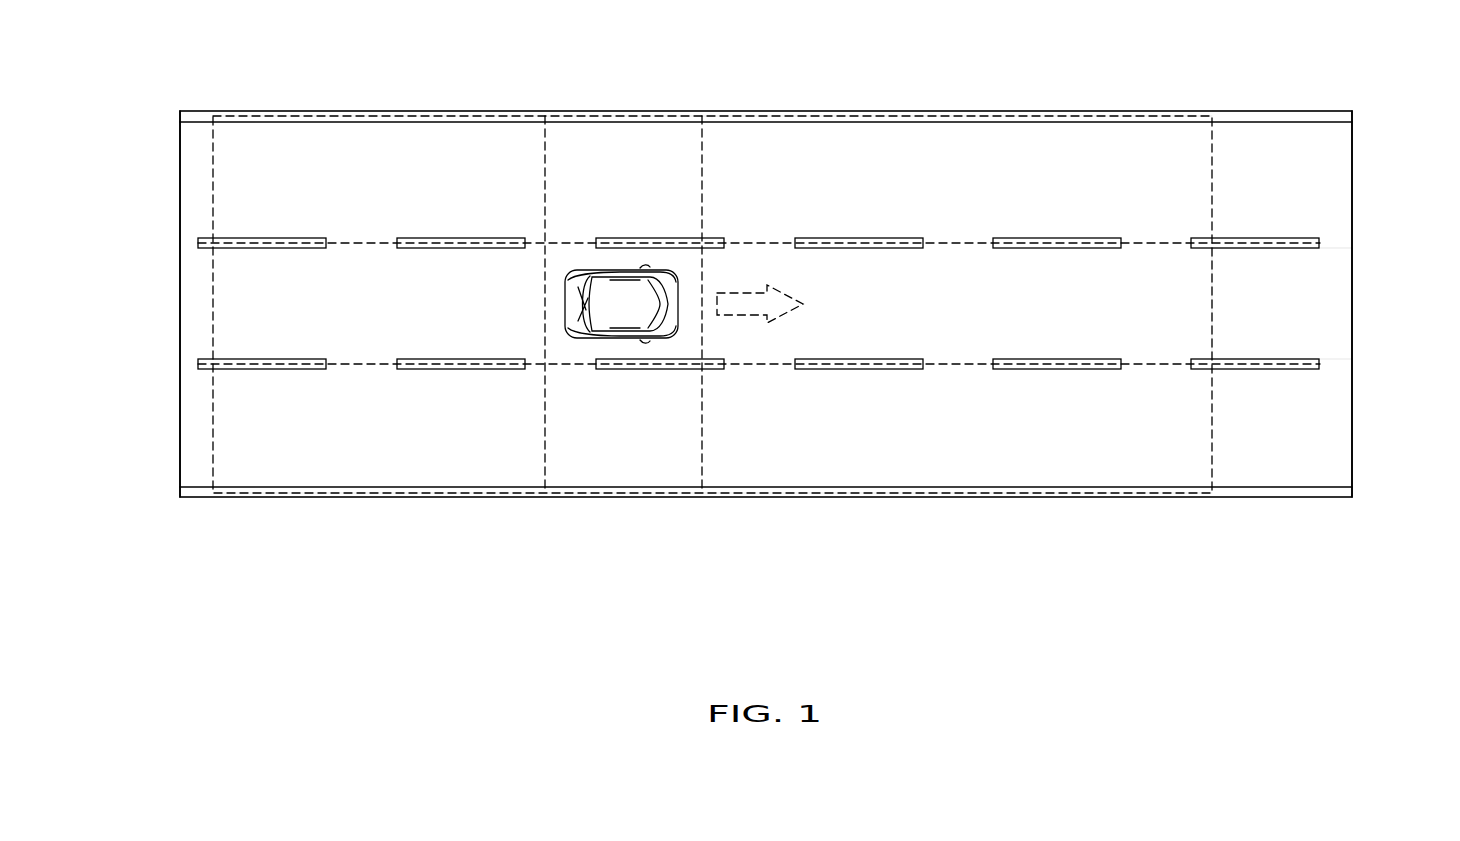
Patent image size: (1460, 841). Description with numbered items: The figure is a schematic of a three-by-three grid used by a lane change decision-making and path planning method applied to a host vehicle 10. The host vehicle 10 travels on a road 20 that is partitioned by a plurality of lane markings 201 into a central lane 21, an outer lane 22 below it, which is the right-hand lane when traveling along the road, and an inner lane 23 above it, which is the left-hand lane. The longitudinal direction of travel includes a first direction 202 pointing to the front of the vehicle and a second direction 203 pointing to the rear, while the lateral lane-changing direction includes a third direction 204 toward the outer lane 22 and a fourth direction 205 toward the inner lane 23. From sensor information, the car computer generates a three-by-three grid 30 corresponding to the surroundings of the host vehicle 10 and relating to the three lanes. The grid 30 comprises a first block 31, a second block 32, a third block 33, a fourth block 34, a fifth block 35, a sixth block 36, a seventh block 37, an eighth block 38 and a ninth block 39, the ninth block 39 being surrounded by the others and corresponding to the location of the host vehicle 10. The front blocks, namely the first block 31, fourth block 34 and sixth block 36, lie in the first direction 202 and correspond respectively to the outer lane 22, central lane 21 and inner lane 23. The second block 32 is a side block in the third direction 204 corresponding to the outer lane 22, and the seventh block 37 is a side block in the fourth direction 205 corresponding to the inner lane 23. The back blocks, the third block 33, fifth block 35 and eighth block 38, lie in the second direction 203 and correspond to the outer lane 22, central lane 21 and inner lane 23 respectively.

The host vehicle 10 is at (612, 315).
The road 20 is at (1300, 158).
The lane markings 201 is at (1278, 366).
The first direction 202 is at (1360, 403).
The second direction 203 is at (168, 418).
The third direction 204 is at (750, 517).
The fourth direction 205 is at (750, 88).
The central lane 21 is at (1242, 330).
The outer lane 22 is at (1330, 463).
The inner lane 23 is at (1270, 140).
The 3×3 grid 30 is at (213, 187).
The first block 31 is at (1018, 462).
The second block 32 is at (658, 460).
The third block 33 is at (418, 460).
The fourth block 34 is at (958, 340).
The fifth block 35 is at (358, 335).
The sixth block 36 is at (958, 140).
The seventh block 37 is at (617, 140).
The eighth block 38 is at (342, 140).
The ninth block 39 is at (574, 262).